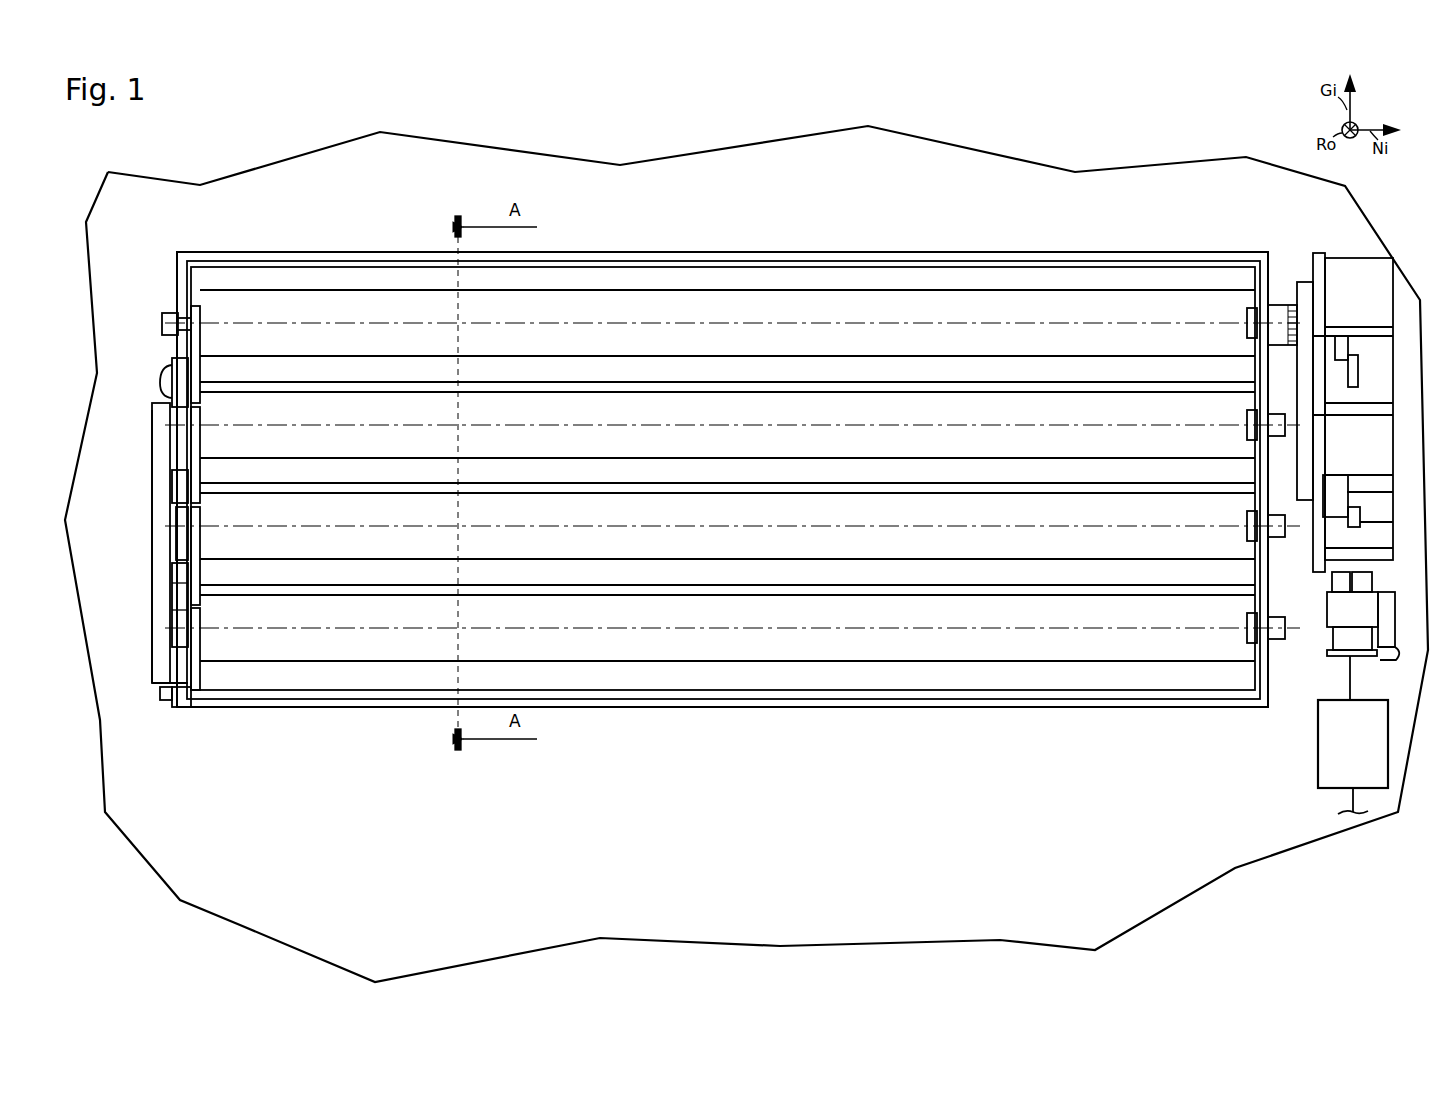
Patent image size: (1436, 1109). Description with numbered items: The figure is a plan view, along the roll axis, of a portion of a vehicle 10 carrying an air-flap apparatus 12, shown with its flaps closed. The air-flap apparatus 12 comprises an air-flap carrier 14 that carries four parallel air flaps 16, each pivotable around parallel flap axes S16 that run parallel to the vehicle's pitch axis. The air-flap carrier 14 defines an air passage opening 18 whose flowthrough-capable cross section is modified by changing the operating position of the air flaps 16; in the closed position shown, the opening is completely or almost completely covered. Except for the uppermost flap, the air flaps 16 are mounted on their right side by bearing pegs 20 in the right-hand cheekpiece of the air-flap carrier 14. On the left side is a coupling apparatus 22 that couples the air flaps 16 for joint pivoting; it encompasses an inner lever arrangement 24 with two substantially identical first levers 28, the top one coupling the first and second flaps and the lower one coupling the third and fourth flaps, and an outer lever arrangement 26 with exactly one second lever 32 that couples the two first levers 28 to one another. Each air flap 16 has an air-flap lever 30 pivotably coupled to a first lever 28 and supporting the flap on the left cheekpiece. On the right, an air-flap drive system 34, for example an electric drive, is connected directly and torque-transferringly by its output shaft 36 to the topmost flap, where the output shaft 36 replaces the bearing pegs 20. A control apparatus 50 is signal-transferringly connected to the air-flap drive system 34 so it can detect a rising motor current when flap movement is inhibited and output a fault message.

The vehicle 10 is at (311, 149).
The air-flap apparatus 12 is at (655, 236).
The air-flap carrier 14 is at (948, 705).
The air flaps 16 is at (764, 318).
The flap axes S16 is at (903, 324).
The air passage opening 18 is at (354, 310).
The bearing pegs 20 is at (1246, 432).
The coupling apparatus 22 is at (124, 303).
The inner lever arrangement 24 is at (164, 350).
The outer lever arrangement 26 is at (140, 451).
The first levers 28 is at (172, 399).
The air-flap lever 30 is at (196, 328).
The second lever 32 is at (155, 508).
The air-flap drive system 34 is at (1368, 308).
The output shaft 36 is at (1278, 305).
The control apparatus 50 is at (1363, 754).